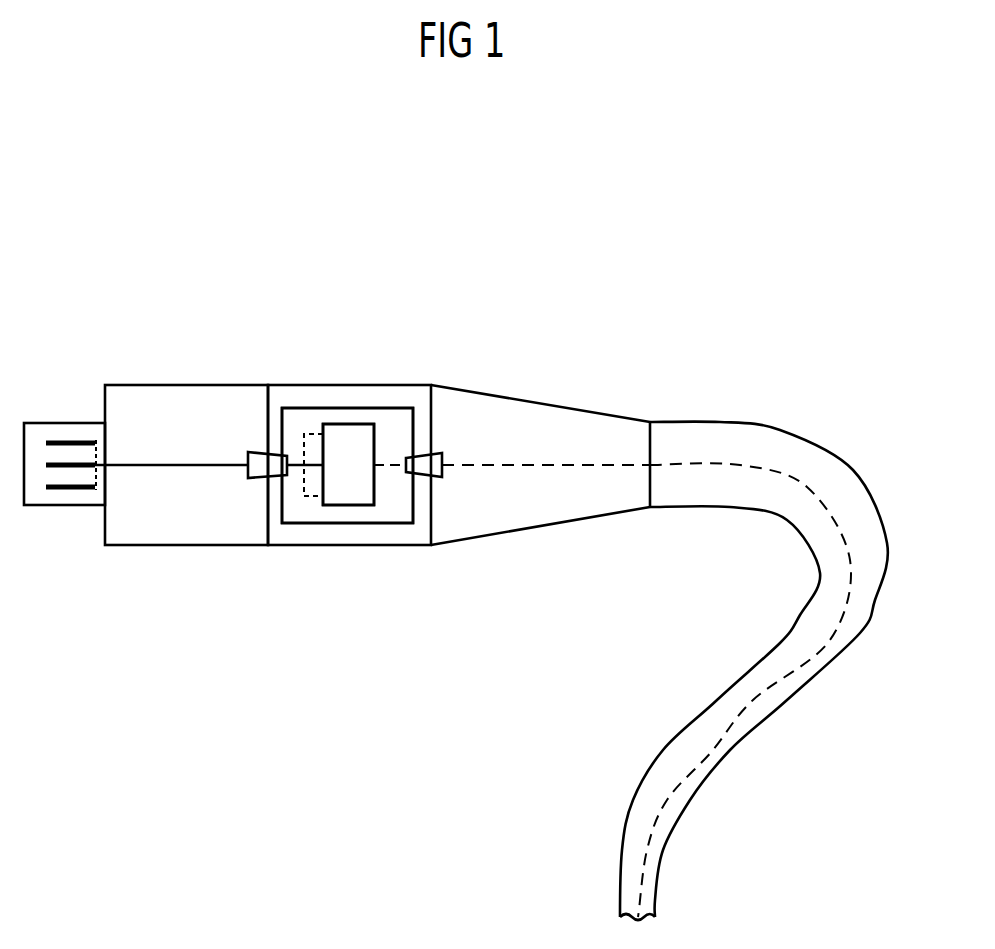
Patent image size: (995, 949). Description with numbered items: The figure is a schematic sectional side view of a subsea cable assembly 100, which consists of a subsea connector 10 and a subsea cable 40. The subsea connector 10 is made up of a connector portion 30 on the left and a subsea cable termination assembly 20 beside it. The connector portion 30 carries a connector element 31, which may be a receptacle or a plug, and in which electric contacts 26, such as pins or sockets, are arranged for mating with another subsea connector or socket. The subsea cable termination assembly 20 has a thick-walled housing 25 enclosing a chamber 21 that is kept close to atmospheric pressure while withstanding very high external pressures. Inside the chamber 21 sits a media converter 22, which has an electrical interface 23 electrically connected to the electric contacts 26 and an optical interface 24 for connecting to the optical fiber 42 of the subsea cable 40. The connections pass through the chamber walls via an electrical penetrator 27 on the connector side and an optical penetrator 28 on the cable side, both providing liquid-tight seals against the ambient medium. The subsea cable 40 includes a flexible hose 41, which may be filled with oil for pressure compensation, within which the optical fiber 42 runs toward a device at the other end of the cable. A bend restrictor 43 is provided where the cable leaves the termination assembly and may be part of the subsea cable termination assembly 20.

The subsea cable assembly 100 is at (410, 212).
The subsea connector 10 is at (407, 708).
The subsea cable termination assembly 20 is at (432, 615).
The chamber 21 is at (400, 418).
The media converter 22 is at (347, 424).
The electrical interface 23 is at (315, 434).
The optical interface 24 is at (374, 467).
The housing 25 is at (350, 545).
The electric contacts 26 is at (60, 487).
The electrical penetrator 27 is at (254, 452).
The optical penetrator 28 is at (432, 453).
The connector portion 30 is at (268, 580).
The connector element 31 is at (63, 505).
The subsea cable 40 is at (754, 607).
The hose 41 is at (673, 422).
The optical fiber 42 is at (683, 465).
The bend restrictor 43 is at (515, 533).